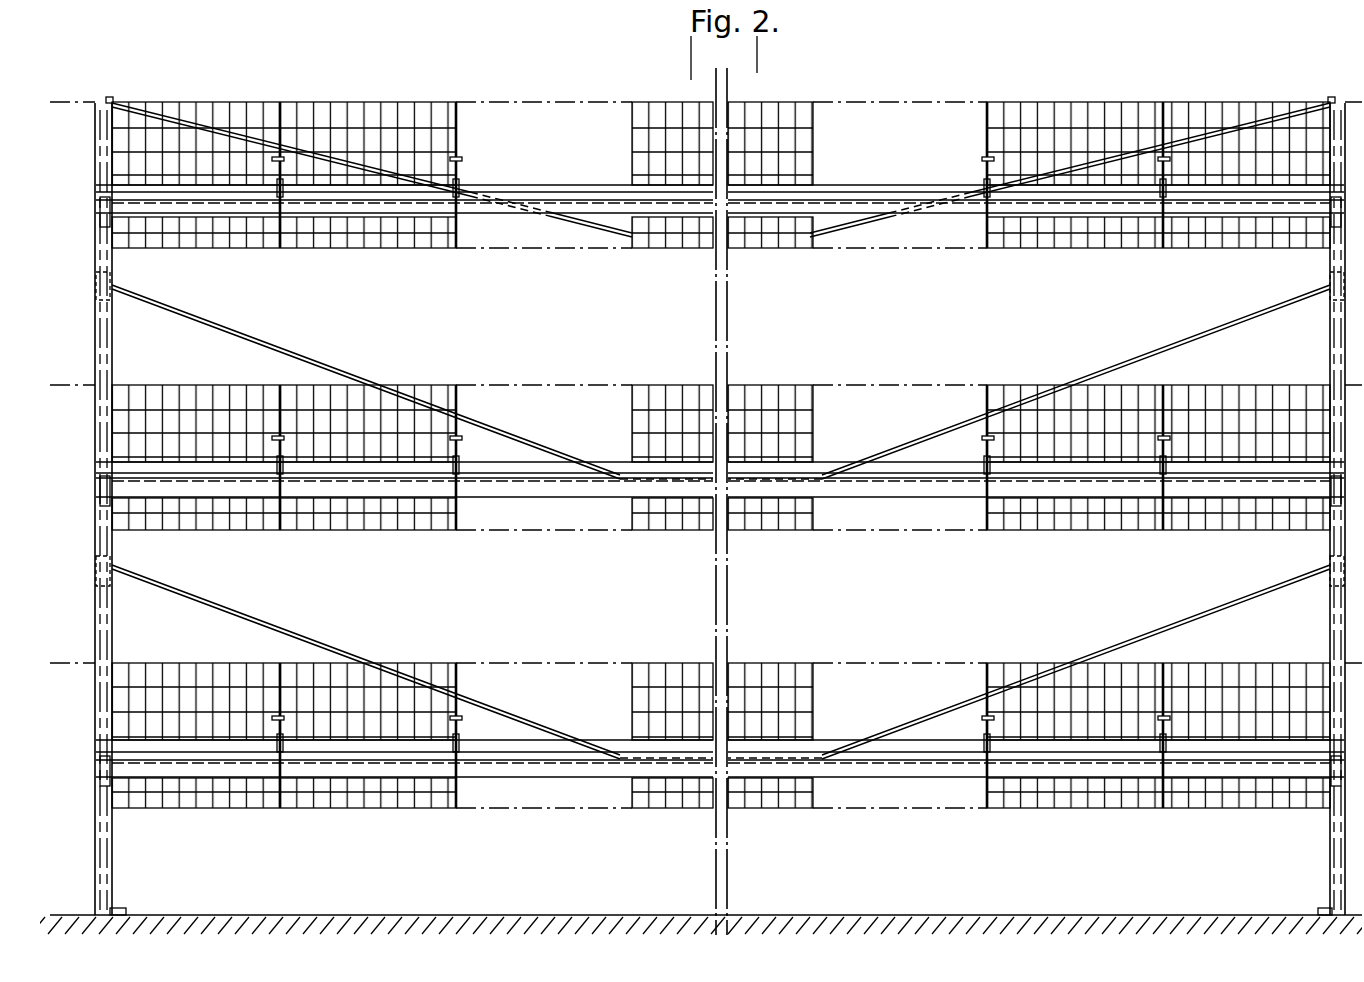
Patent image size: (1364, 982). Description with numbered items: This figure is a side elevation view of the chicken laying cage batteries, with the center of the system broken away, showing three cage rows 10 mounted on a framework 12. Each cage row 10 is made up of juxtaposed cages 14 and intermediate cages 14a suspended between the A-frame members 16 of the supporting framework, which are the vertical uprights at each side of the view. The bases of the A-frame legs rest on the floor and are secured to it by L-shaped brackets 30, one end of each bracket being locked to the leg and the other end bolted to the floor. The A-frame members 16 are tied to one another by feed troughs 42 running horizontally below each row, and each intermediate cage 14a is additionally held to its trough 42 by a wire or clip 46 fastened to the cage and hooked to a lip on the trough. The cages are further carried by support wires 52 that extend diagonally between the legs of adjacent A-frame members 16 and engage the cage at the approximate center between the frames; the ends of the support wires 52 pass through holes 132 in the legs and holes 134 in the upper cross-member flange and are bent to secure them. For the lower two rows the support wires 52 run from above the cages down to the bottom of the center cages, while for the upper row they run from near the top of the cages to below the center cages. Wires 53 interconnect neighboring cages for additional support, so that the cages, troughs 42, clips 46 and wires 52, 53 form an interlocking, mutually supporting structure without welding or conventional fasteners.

The cage row 10 is at (1072, 101).
The framework 12 is at (1285, 820).
The cage 14 is at (246, 108).
The intermediate cage 14a is at (375, 112).
The A-frame member 16 is at (1328, 335).
The L-shaped bracket 30 is at (128, 912).
The feed trough 42 is at (485, 212).
The wire or clip 46 is at (1163, 477).
The support wire 52 is at (605, 228).
The wire 53 is at (282, 157).
The hole 132 is at (96, 287).
The hole 134 is at (104, 100).